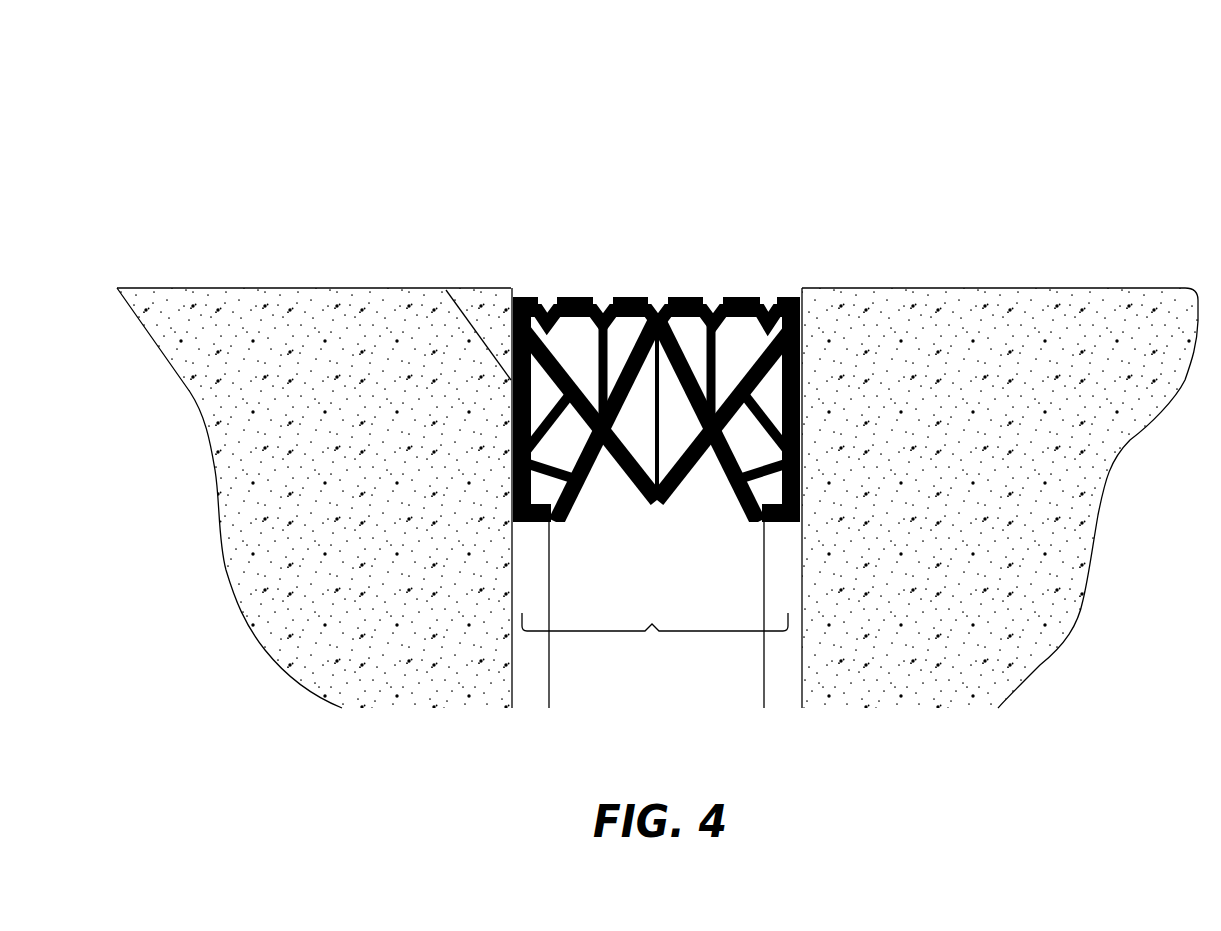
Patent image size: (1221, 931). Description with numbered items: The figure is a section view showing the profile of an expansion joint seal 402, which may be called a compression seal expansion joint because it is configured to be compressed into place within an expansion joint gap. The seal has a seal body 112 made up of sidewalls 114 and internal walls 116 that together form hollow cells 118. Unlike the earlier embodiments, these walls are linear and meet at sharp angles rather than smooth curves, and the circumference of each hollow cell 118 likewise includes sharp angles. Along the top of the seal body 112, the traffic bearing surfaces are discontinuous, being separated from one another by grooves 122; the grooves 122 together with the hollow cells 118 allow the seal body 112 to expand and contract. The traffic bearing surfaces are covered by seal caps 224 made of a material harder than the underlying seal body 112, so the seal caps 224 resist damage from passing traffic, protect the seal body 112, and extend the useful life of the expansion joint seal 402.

The expansion joint seal 402 is at (518, 88).
The seal body 112 is at (655, 639).
The sidewalls 114 is at (511, 459).
The internal walls 116 is at (596, 392).
The hollow cells 118 is at (655, 433).
The grooves 122 is at (594, 296).
The seal caps 224 is at (622, 295).